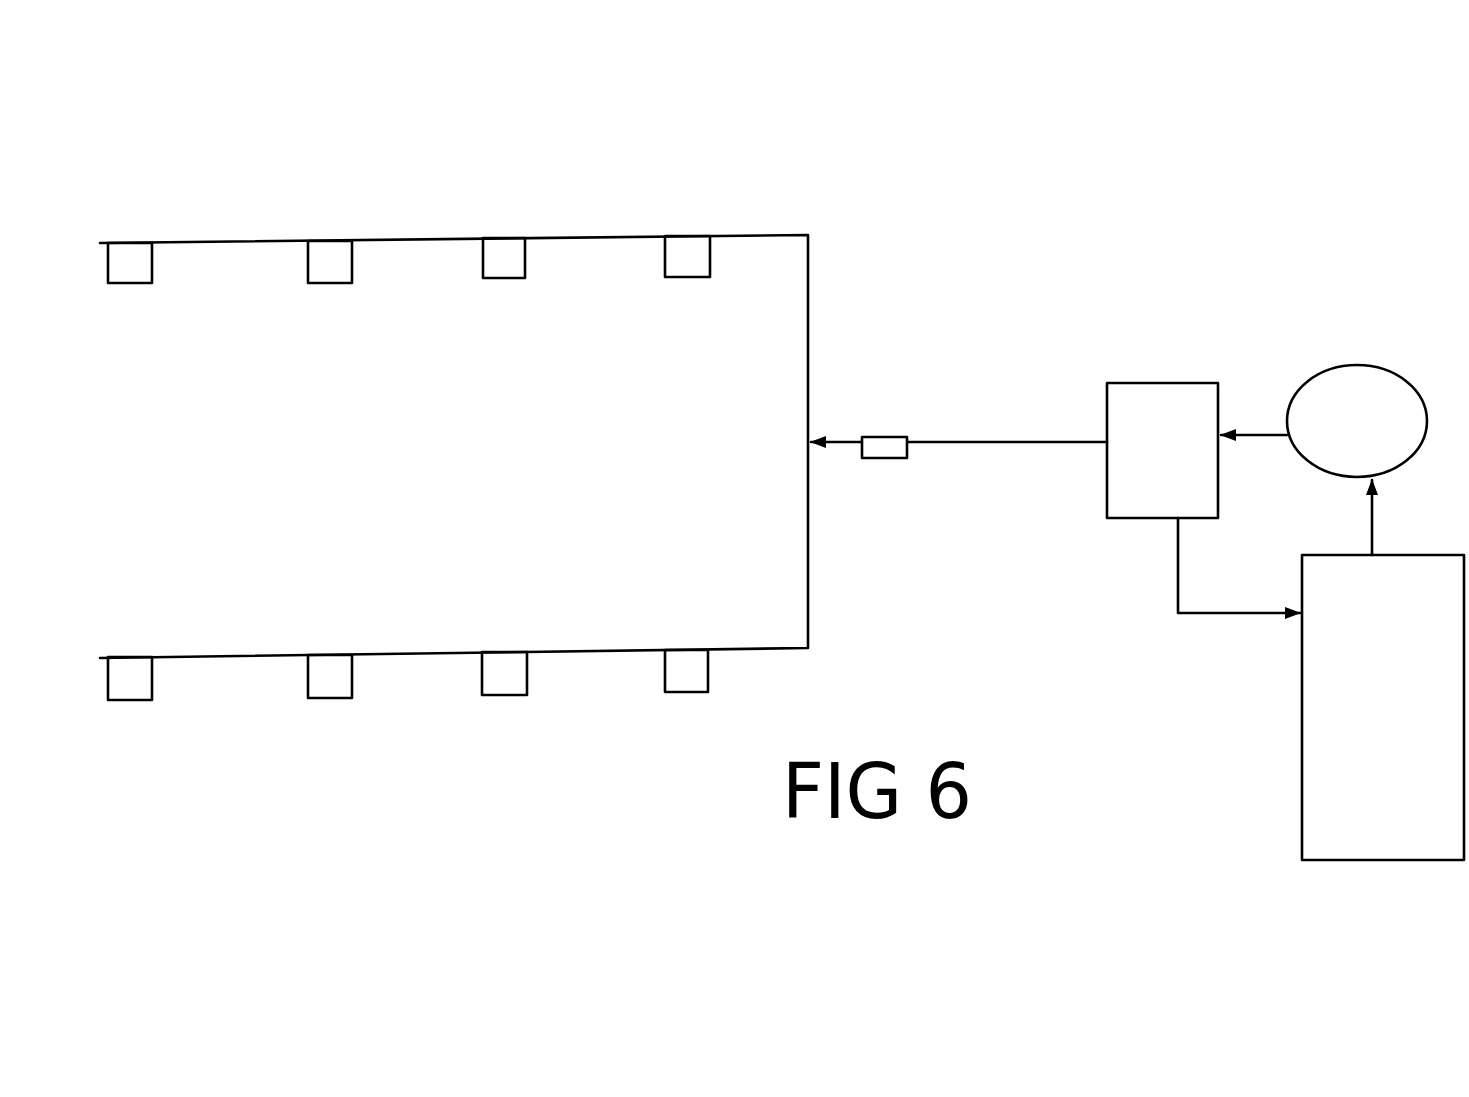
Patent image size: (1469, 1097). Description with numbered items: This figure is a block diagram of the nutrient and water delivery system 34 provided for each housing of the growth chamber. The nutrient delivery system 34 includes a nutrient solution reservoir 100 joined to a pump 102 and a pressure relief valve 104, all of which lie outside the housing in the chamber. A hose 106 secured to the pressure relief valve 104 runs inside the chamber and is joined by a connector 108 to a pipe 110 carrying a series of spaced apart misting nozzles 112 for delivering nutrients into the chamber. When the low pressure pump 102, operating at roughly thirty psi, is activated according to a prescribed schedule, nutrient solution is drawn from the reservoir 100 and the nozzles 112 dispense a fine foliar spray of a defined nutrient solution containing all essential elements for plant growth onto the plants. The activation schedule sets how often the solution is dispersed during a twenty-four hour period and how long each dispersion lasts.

The nutrient delivery system 34 is at (990, 176).
The nutrient solution reservoir 100 is at (1300, 680).
The pump 102 is at (1356, 348).
The pressure relief valve 104 is at (1163, 380).
The hose 106 is at (985, 440).
The connector 108 is at (890, 462).
The pipe 110 is at (600, 236).
The misting nozzles 112 is at (697, 657).